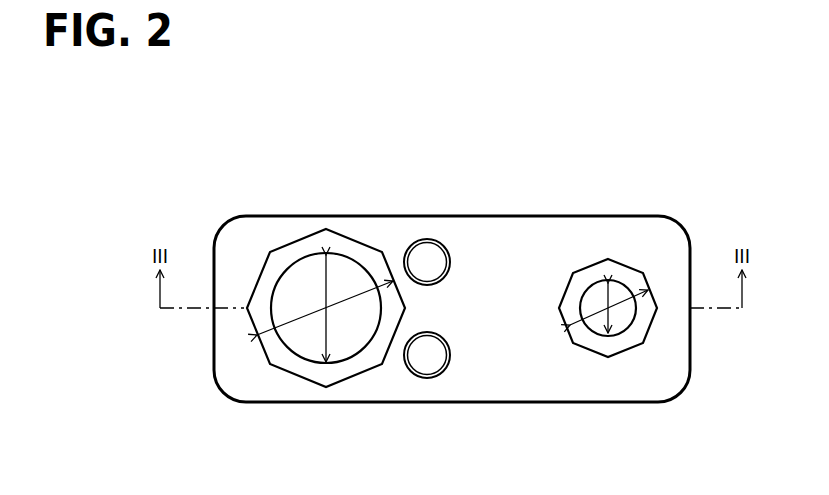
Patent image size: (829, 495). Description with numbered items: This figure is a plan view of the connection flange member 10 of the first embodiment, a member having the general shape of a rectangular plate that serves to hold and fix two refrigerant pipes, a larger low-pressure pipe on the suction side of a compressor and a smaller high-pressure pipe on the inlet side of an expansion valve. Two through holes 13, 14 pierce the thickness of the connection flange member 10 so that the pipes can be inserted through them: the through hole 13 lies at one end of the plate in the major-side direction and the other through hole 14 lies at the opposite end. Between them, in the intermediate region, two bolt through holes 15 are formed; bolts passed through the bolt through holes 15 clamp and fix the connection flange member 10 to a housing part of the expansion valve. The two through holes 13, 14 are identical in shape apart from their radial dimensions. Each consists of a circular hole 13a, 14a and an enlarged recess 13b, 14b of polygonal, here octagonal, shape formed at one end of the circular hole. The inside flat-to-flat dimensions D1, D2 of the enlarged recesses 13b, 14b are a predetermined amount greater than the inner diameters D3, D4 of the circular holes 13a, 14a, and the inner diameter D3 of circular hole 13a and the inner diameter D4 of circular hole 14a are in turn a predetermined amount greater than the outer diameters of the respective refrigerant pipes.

The connection flange member 10 is at (518, 214).
The through hole 13 is at (326, 252).
The circular hole 13a is at (310, 273).
The enlarged recess 13b is at (362, 252).
The through hole 14 is at (628, 237).
The circular hole 14a is at (592, 294).
The enlarged recess 14b is at (630, 274).
The bolt through holes 15 is at (428, 253).
The inside flat-to-flat dimension D1 is at (297, 318).
The inside flat-to-flat dimension D2 is at (608, 336).
The inner diameter D3 is at (318, 333).
The inner diameter D4 is at (617, 316).